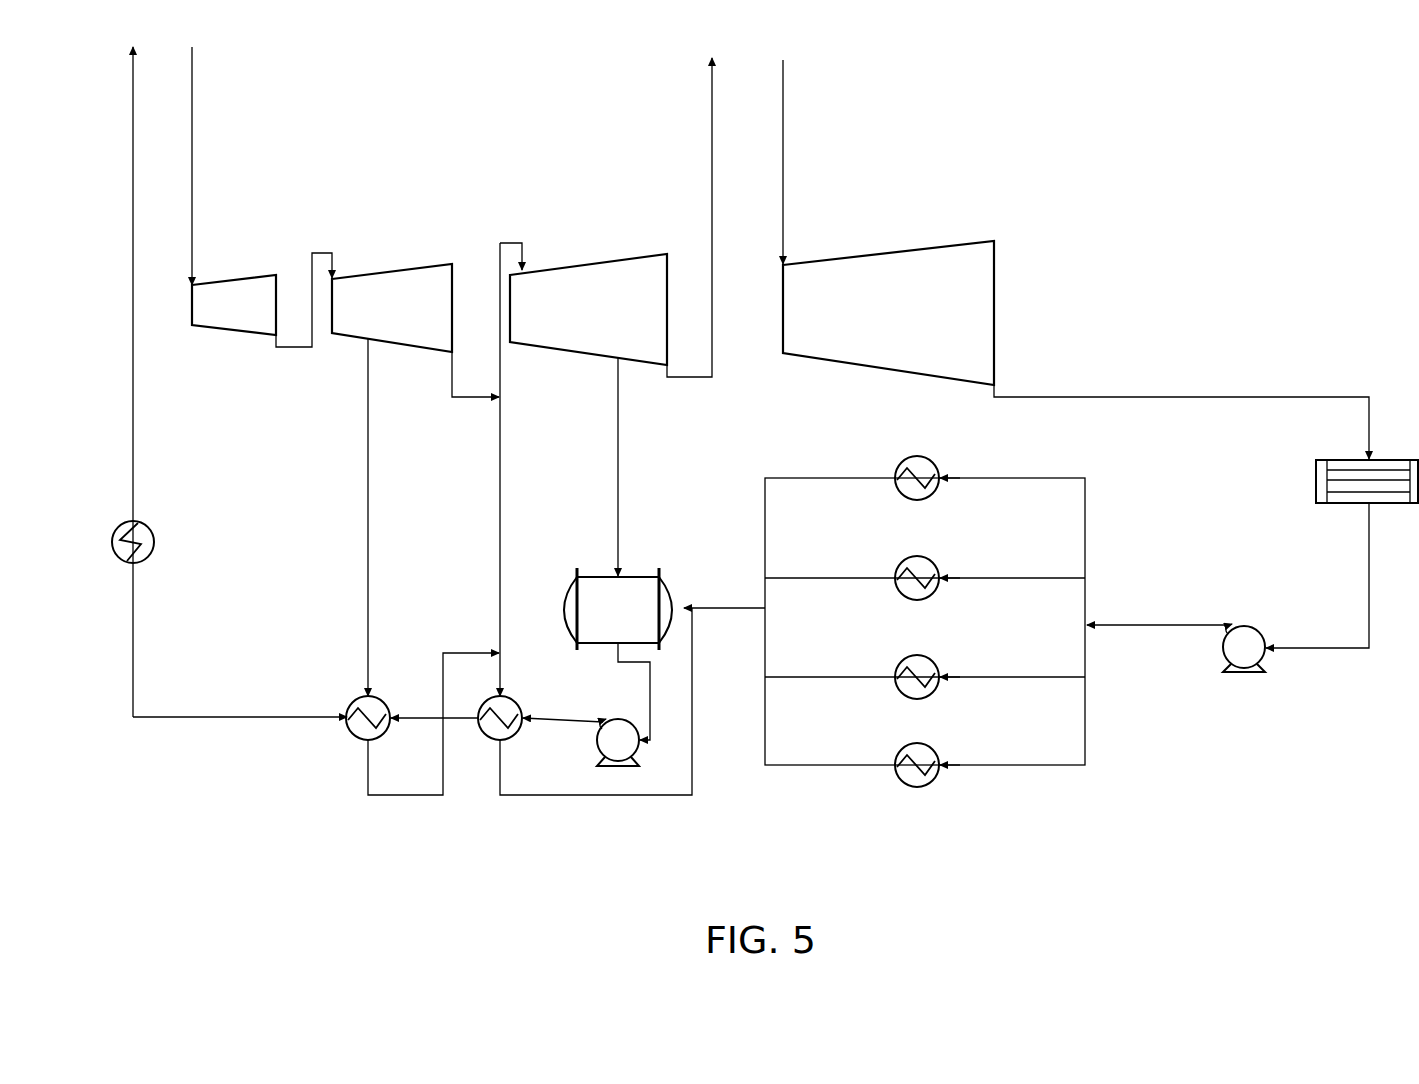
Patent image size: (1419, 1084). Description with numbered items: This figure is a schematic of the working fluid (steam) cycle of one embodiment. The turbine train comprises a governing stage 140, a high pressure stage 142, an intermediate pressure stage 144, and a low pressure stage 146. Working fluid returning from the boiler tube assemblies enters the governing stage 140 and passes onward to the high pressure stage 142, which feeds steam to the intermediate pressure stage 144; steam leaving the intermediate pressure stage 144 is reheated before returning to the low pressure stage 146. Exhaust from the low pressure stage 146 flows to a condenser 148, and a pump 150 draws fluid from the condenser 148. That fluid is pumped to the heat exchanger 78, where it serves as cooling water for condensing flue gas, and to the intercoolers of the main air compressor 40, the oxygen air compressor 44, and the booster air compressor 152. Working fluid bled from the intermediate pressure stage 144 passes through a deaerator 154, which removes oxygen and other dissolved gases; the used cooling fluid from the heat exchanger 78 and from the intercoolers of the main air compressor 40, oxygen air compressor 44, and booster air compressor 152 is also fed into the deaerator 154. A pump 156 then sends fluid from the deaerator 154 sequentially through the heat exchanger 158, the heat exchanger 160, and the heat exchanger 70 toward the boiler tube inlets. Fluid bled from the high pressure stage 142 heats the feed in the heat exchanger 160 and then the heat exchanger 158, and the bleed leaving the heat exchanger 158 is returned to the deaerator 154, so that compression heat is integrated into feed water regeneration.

The governing stage 140 is at (236, 282).
The high pressure stage 142 is at (386, 271).
The intermediate pressure stage 144 is at (578, 265).
The low pressure stage 146 is at (870, 258).
The condenser 148 is at (1340, 505).
The pump 150 is at (1243, 677).
The booster air compressor 152 is at (930, 745).
The deaerator 154 is at (636, 575).
The pump 156 is at (597, 737).
The heat exchanger 158 is at (512, 697).
The heat exchanger 160 is at (383, 700).
The heat exchanger 70 is at (150, 525).
The heat exchanger 78 is at (932, 462).
The main air compressor 40 is at (936, 562).
The oxygen air compressor 44 is at (936, 660).